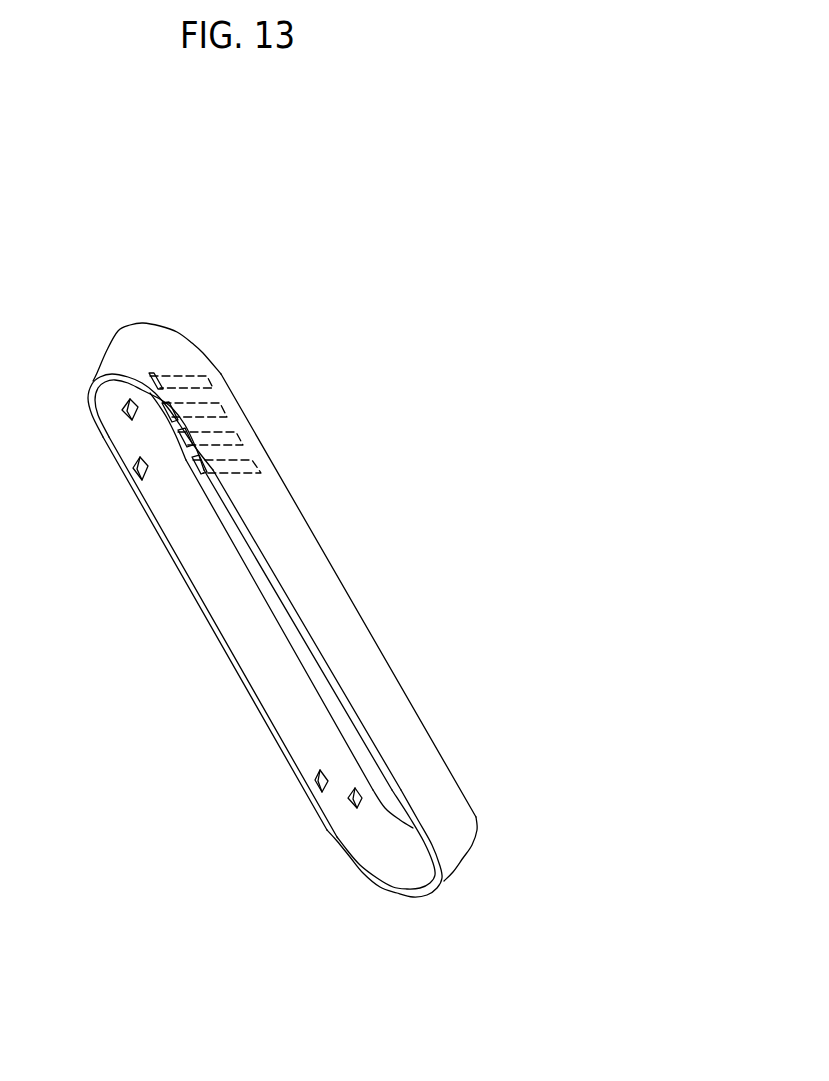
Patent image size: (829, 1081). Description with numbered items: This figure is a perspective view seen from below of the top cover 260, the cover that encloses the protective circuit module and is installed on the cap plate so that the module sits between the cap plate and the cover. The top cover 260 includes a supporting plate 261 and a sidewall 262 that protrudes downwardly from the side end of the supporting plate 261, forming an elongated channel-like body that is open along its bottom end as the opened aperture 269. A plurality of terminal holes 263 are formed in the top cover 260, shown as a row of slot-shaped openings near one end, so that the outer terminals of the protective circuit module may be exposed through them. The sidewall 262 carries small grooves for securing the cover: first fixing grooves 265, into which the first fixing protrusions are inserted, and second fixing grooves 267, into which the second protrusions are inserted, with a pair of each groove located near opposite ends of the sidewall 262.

The top cover 260 is at (412, 600).
The supporting plate 261 is at (297, 647).
The sidewall 262 is at (232, 607).
The terminal holes 263 is at (253, 462).
The first fixing grooves 265 is at (129, 409).
The second fixing grooves 267 is at (141, 479).
The opened aperture 269 is at (292, 767).